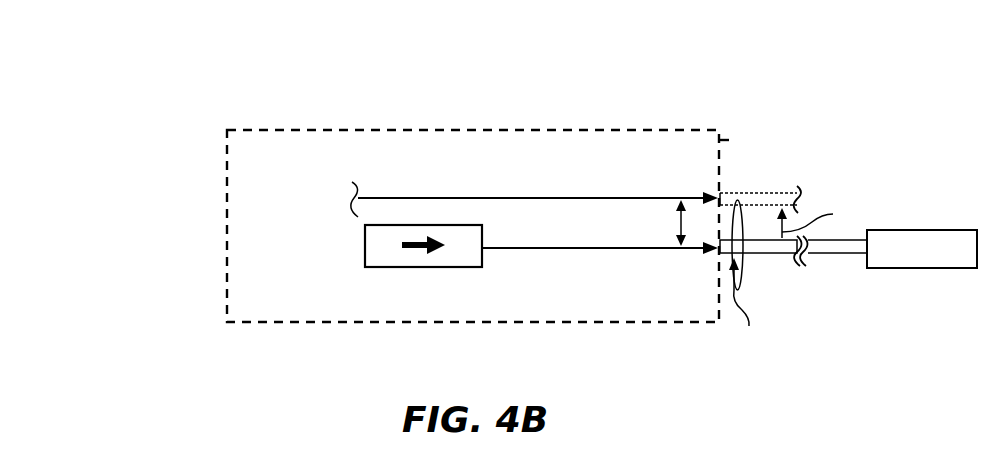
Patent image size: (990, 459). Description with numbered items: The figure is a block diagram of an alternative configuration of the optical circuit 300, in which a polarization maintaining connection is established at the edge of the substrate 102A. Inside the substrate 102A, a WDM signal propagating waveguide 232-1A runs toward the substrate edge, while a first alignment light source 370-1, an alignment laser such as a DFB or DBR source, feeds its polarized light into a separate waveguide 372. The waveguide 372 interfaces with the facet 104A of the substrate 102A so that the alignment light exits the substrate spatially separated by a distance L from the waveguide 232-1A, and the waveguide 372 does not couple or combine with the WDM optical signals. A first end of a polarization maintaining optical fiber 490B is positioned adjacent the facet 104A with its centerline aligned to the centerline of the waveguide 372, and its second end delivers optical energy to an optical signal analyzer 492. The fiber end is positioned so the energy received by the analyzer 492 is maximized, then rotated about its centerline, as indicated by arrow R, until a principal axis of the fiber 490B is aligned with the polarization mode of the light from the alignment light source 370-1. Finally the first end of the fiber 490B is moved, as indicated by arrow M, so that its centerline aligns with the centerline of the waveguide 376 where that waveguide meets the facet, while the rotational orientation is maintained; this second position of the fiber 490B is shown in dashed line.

The optical circuit 300 is at (124, 56).
The substrate 102A is at (256, 128).
The second unit (detector side) 104A is at (740, 138).
The waveguide 232-1A is at (470, 197).
The waveguide 376 is at (645, 197).
The first alignment light source 370-1 is at (447, 266).
The waveguide 372 is at (525, 249).
The polarization maintaining optical fiber 490B is at (772, 192).
The optical signal analyzer 492 is at (880, 230).